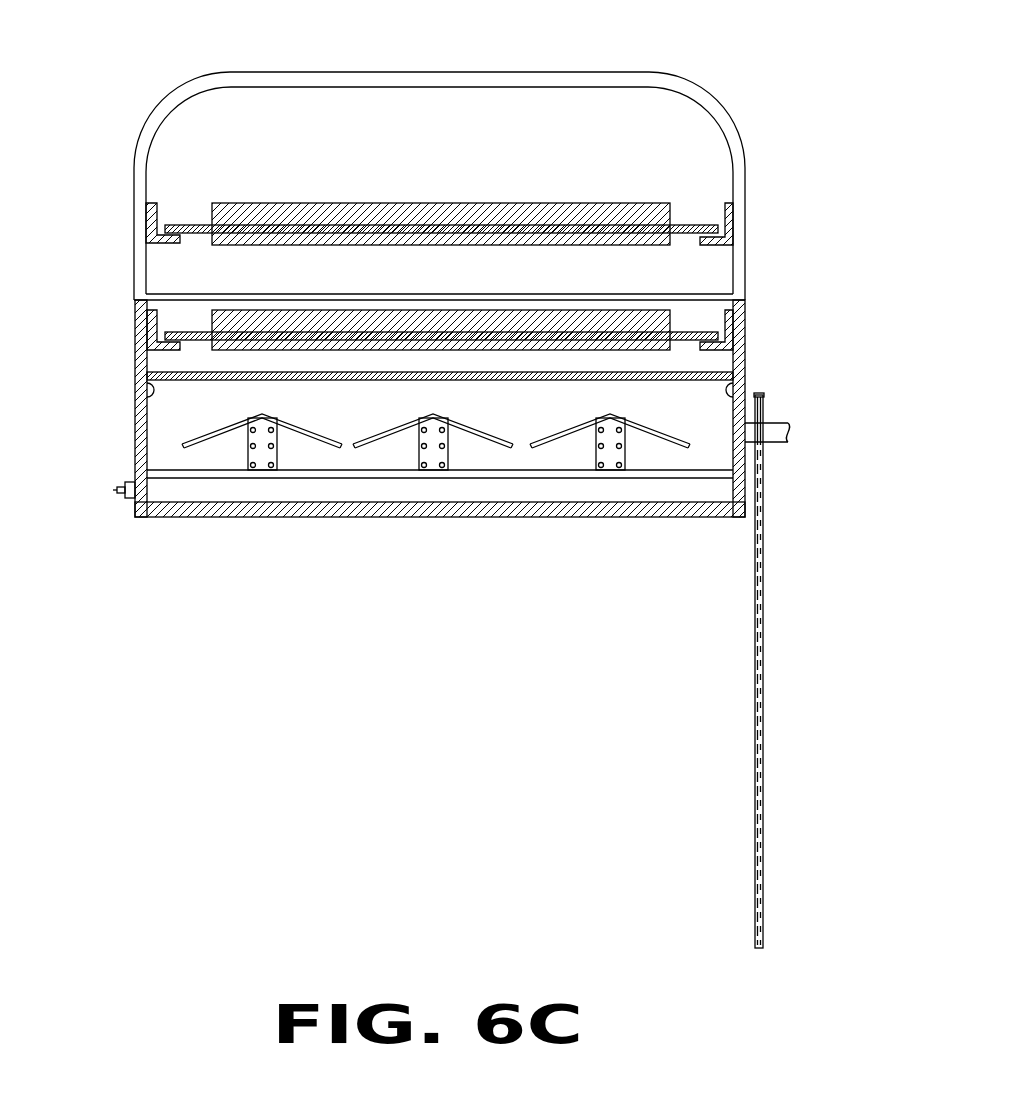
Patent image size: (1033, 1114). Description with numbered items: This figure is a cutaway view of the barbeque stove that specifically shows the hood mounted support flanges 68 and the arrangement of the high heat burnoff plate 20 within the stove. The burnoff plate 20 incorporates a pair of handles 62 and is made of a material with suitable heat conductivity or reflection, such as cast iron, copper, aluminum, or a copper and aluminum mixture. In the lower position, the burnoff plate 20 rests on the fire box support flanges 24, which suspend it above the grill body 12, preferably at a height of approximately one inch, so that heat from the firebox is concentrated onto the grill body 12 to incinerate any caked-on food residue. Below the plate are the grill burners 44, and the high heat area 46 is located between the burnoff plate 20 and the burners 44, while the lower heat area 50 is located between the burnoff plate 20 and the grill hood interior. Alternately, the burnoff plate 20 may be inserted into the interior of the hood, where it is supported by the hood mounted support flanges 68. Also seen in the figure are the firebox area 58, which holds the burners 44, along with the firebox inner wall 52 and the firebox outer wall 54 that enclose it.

The grill body 12 is at (712, 378).
The burnoff plate 20 is at (690, 220).
The support flanges 24 is at (220, 322).
The grill burners 44 is at (262, 470).
The high heat area 46 is at (380, 420).
The lower heat area 50 is at (365, 275).
The firebox inner wall 52 is at (148, 490).
The firebox outer wall 54 is at (135, 508).
The firebox area 58 is at (715, 433).
The handles 62 is at (763, 395).
The hood mounted support flanges 68 is at (263, 213).